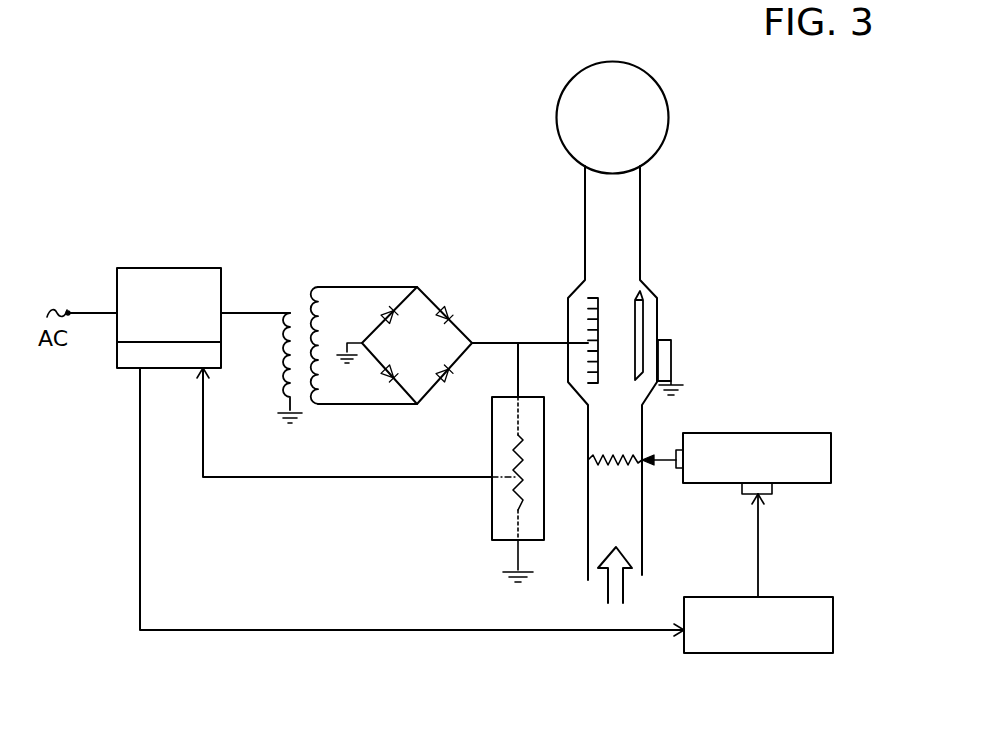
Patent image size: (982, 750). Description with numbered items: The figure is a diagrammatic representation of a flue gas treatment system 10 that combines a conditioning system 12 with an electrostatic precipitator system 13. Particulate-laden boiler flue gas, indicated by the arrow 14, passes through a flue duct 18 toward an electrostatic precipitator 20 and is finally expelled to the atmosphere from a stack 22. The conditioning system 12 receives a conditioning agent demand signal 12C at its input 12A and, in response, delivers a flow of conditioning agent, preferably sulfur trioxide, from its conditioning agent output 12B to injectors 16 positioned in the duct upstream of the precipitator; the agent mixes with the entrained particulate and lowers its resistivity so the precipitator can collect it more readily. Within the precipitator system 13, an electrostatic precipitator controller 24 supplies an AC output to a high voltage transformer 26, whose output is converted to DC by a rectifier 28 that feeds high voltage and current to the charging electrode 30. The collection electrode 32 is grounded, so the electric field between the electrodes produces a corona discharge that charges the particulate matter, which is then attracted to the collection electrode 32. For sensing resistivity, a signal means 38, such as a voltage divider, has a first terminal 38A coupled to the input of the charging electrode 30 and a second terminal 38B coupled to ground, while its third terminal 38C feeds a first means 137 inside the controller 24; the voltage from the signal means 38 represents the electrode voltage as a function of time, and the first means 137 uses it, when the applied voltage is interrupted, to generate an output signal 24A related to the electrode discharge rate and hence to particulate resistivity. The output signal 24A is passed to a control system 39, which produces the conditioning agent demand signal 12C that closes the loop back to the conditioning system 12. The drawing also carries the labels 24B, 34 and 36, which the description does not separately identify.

The flue gas treatment system 10 is at (200, 130).
The conditioning system 12 is at (771, 433).
The input 12A is at (772, 486).
The conditioning agent output 12B is at (677, 450).
The conditioning agent demand signal 12C is at (759, 562).
The electrostatic precipitator system 13 is at (275, 185).
The flow of particulate-laden boiler flue gas 14 is at (623, 592).
The injectors 16 is at (620, 463).
The flue duct 18 is at (588, 441).
The electrostatic precipitator 20 is at (658, 341).
The stack 22 is at (557, 118).
The electrostatic precipitator controller 24 is at (148, 268).
The output signal 24A is at (140, 526).
The output line 24B is at (229, 312).
The high voltage transformer 26 is at (299, 300).
The rectifier 28 is at (433, 300).
The charging electrode 30 is at (585, 313).
The collection electrode 32 is at (648, 322).
The electrode tip 34 is at (641, 292).
The discharge gap 36 is at (622, 322).
The signal means 38 is at (492, 437).
The first terminal 38A is at (518, 345).
The second terminal 38B is at (543, 561).
The third terminal 38C is at (389, 472).
The control system 39 is at (801, 630).
The first means 137 is at (117, 348).